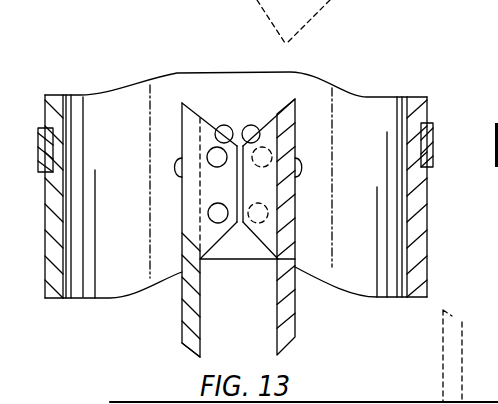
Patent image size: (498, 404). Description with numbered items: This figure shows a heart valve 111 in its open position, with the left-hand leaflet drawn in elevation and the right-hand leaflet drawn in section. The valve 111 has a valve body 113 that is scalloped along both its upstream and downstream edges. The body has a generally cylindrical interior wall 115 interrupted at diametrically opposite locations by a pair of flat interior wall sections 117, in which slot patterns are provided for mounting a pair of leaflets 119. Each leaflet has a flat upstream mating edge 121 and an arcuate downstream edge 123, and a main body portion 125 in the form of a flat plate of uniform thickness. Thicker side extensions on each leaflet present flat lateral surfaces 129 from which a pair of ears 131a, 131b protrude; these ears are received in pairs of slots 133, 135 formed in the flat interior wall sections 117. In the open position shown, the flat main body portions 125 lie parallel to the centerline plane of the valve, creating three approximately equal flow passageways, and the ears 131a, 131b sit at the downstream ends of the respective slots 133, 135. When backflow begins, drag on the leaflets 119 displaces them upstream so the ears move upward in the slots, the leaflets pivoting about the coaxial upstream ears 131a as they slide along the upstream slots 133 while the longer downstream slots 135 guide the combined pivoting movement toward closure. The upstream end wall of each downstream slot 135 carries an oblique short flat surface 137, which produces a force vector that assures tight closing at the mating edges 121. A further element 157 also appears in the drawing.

The heart valve 111 is at (133, 82).
The valve body 113 is at (413, 97).
The cylindrical interior wall 115 is at (107, 287).
The flat interior wall sections 117 is at (184, 104).
The leaflets 119 is at (303, 313).
The upstream mating edge 121 is at (291, 100).
The arcuate downstream edge 123 is at (185, 345).
The main body portion 125 is at (293, 222).
The flat surfaces 129 is at (201, 122).
The upstream ear 131a is at (208, 151).
The downstream ear 131b is at (220, 224).
The upstream slot 133 is at (237, 124).
The downstream slot 135 is at (300, 160).
The oblique short flat surface 137 is at (300, 167).
The base 157 is at (346, 402).